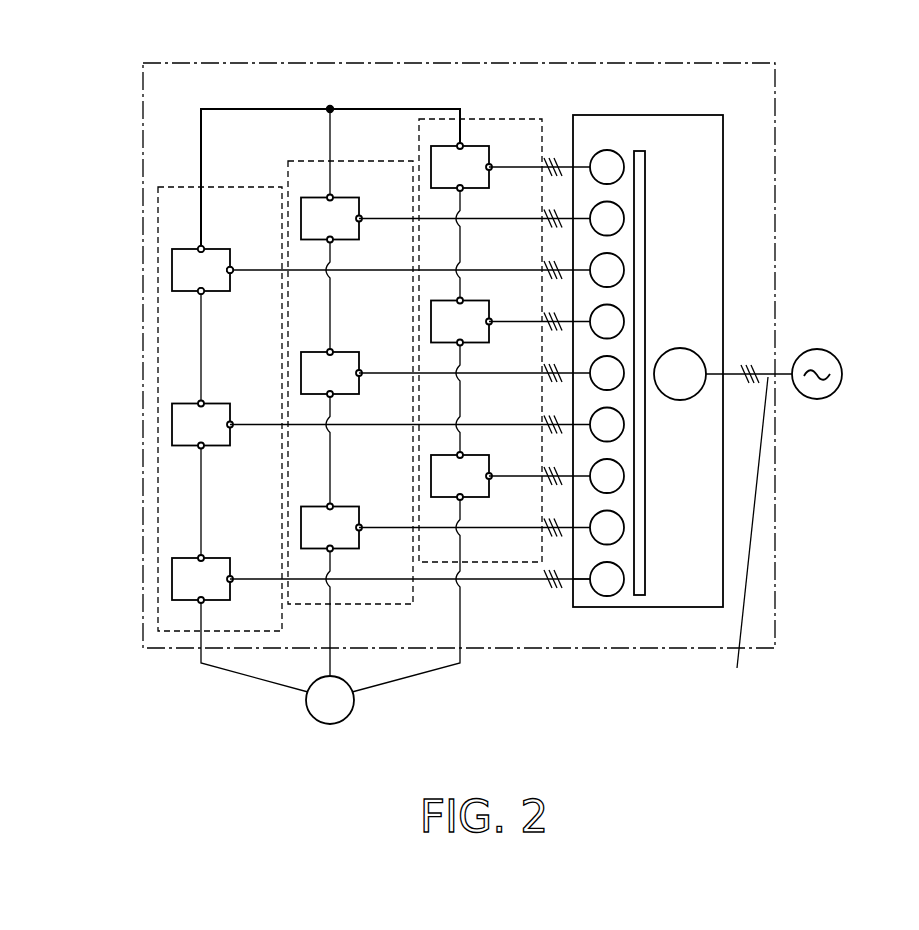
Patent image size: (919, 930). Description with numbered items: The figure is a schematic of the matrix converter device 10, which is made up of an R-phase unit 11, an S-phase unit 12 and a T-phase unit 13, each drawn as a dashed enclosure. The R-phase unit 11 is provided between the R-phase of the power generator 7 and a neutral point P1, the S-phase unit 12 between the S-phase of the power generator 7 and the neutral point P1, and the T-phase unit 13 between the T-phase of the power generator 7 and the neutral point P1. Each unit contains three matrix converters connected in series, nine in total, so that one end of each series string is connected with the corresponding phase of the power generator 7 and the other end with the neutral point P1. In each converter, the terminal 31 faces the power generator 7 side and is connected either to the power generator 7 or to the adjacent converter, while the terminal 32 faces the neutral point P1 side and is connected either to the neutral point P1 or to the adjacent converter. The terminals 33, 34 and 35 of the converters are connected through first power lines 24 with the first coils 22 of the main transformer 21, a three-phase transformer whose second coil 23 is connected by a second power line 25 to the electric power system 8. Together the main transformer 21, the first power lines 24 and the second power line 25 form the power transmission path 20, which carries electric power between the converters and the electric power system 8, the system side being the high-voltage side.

The matrix converter device 10 is at (744, 89).
The R-phase unit 11 is at (178, 187).
The S-phase unit 12 is at (355, 161).
The T-phase unit 13 is at (490, 119).
The neutral point P1 is at (330, 106).
The terminal 31 is at (203, 293).
The terminal 32 is at (203, 246).
The terminal 33 is at (232, 267).
The terminal 34 is at (230, 270).
The terminal 35 is at (230, 270).
The power generator 7 is at (350, 716).
The electric power system 8 is at (843, 372).
The power transmission path 20 is at (653, 380).
The main transformer 21 is at (637, 608).
The first coils 22 is at (624, 214).
The second coil 23 is at (680, 348).
The first power lines 24 is at (527, 581).
The second power line 25 is at (745, 536).